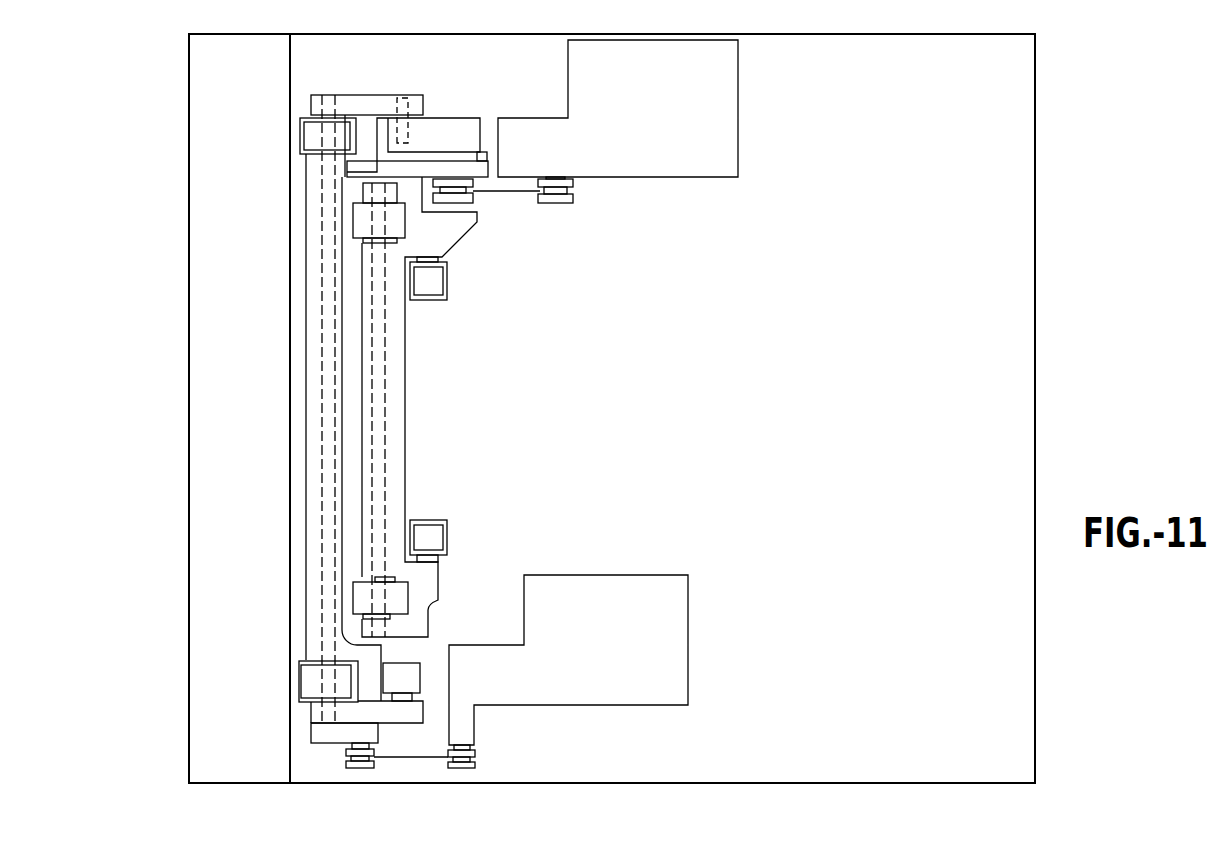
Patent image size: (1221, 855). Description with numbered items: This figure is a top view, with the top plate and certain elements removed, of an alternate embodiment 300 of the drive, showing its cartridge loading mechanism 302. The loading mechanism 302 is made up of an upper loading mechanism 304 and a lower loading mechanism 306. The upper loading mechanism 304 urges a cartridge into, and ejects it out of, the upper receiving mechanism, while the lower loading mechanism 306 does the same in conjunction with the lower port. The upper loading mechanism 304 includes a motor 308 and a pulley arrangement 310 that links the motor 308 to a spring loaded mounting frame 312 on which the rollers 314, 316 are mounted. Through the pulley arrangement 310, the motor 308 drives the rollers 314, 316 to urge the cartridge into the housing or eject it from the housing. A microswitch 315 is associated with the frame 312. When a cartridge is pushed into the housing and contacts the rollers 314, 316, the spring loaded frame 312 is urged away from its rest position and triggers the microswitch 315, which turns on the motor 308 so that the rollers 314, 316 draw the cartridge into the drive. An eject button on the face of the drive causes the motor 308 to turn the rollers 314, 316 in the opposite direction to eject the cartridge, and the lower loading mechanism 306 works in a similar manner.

The alternate embodiment of the drive 300 is at (176, 746).
The cartridge loading mechanism 302 is at (272, 673).
The upper loading mechanism 304 is at (428, 584).
The lower loading mechanism 306 is at (405, 710).
The motor 308 is at (722, 131).
The pulley arrangement 310 is at (519, 191).
The spring loaded mounting frame 312 is at (487, 168).
The roller 314 is at (362, 220).
The microswitch 315 is at (487, 157).
The roller 316 is at (365, 592).